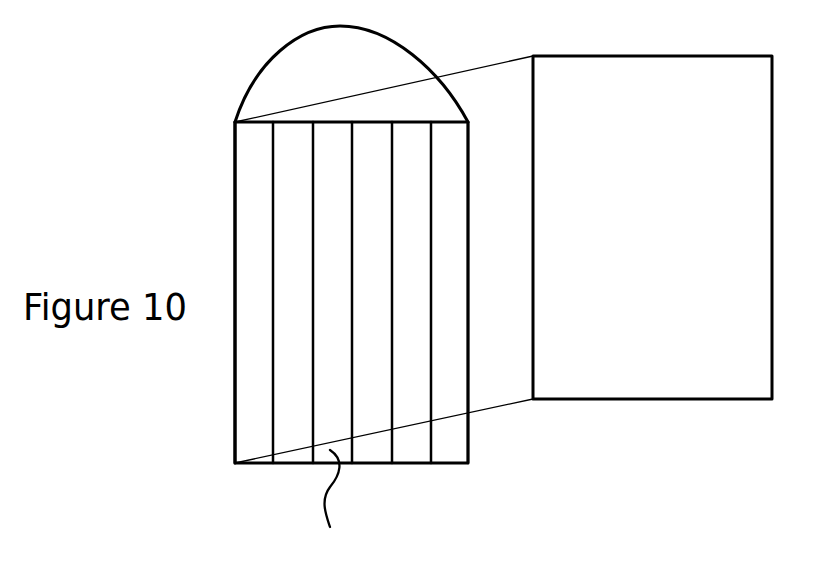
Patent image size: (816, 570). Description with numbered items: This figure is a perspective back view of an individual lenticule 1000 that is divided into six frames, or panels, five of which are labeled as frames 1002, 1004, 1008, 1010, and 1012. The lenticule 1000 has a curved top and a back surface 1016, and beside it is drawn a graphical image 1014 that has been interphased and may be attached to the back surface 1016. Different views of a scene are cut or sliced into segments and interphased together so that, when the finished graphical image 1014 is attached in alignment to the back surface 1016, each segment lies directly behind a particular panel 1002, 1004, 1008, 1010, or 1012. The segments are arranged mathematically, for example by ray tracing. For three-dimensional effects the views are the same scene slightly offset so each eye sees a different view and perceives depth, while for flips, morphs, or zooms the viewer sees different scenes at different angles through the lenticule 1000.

The lenticule 1000 is at (163, 208).
The frame 1002 is at (247, 415).
The frame 1004 is at (288, 448).
The frame 1008 is at (370, 423).
The frame 1010 is at (412, 443).
The frame 1012 is at (457, 442).
The graphical image 1014 is at (677, 400).
The back surface 1016 is at (258, 219).